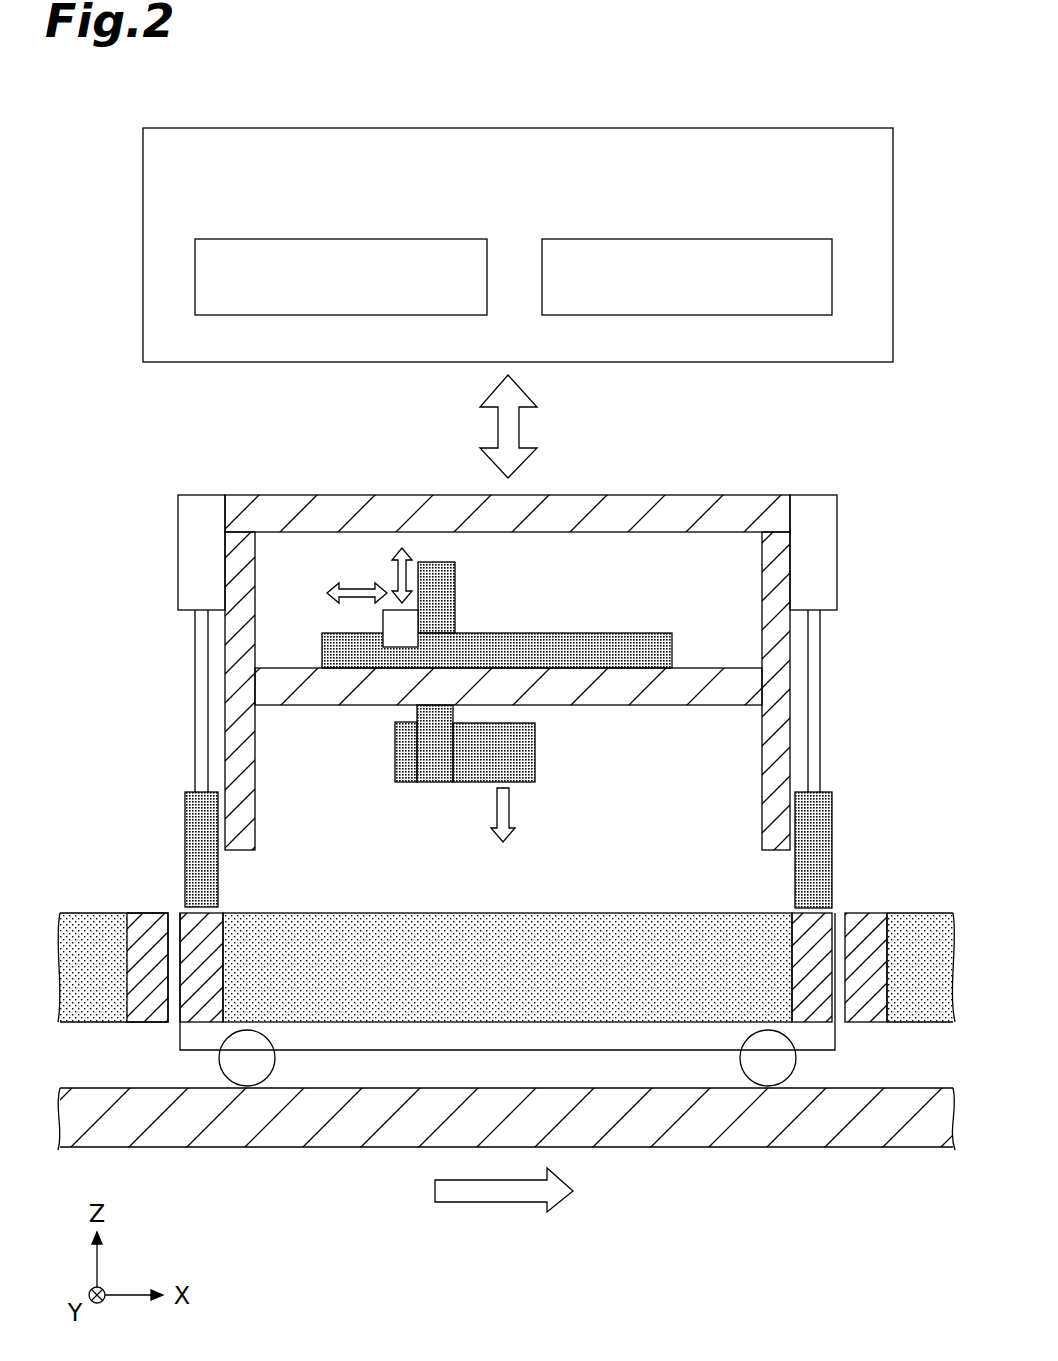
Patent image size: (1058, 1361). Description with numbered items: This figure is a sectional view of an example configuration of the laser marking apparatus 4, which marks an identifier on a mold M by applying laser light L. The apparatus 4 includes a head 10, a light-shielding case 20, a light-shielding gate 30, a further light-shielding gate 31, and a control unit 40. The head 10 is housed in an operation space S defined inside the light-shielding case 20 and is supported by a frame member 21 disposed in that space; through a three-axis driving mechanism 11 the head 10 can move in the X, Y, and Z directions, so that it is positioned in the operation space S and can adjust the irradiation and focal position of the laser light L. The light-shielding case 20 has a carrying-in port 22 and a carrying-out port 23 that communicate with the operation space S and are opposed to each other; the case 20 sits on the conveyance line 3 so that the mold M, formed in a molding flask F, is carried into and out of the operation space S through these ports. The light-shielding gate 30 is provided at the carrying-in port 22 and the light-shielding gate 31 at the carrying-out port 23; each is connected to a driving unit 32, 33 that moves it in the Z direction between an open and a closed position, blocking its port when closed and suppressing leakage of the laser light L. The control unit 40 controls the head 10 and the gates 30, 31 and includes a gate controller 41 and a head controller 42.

The laser marking apparatus 4 is at (872, 84).
The control unit 40 is at (305, 128).
The gate controller 41 is at (425, 239).
The head controller 42 is at (775, 239).
The light-shielding case 20 is at (703, 495).
The frame member 21 is at (720, 706).
The carrying-in port 22 is at (236, 851).
The carrying-out port 23 is at (777, 851).
The driving unit 32 is at (178, 540).
The driving unit 33 is at (838, 512).
The light-shielding gate 30 is at (184, 813).
The light-shielding gate 31 is at (834, 818).
The three-axis driving mechanism 11 is at (456, 580).
The head 10 is at (537, 743).
The conveyance line 3 is at (862, 1147).
The operation space S is at (312, 782).
The laser light L is at (511, 805).
The mold M is at (642, 912).
The molding flask F is at (826, 906).